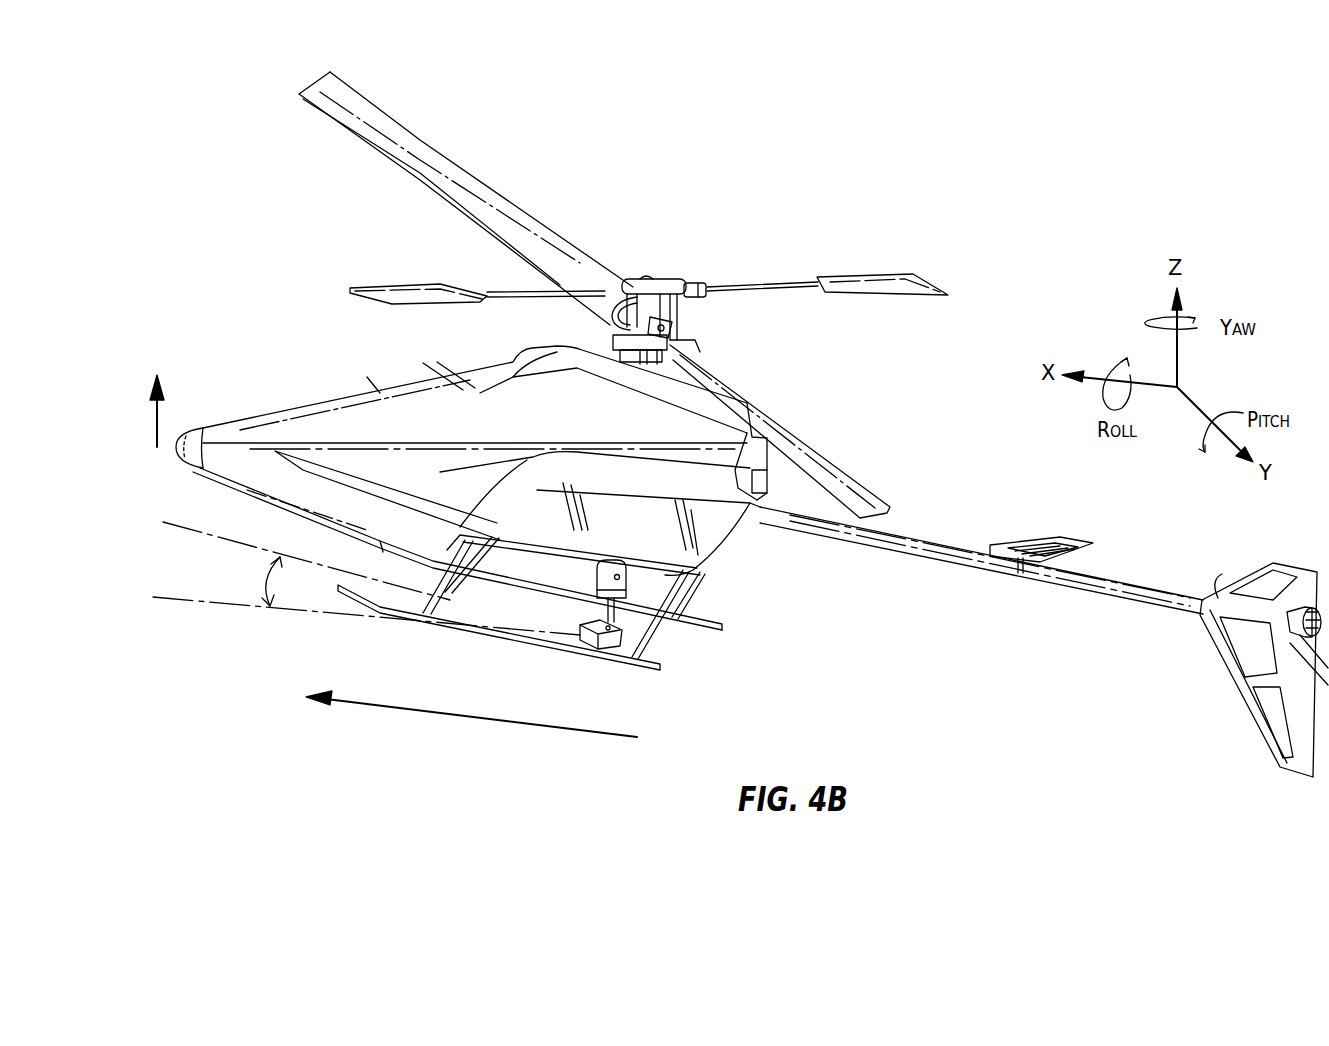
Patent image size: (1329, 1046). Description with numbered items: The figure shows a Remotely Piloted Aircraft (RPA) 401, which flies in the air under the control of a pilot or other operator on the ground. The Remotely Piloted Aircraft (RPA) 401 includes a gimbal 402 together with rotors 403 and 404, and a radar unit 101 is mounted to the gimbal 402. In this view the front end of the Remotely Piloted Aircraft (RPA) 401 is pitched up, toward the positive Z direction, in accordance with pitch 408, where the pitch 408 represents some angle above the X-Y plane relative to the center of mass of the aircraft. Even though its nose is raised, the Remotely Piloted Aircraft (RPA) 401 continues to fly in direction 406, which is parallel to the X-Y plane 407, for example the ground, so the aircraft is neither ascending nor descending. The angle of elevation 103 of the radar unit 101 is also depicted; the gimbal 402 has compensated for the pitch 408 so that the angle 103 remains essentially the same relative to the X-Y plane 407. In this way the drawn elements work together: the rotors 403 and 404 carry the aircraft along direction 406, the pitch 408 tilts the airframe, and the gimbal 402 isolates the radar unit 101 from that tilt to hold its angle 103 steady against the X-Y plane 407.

The Remotely Piloted Aircraft (RPA) 401 is at (689, 508).
The rotor 403 is at (622, 278).
The rotor 404 is at (1220, 580).
The gimbal 402 is at (620, 585).
The radar unit 101 is at (596, 638).
The direction 406 is at (457, 715).
The X-Y plane 407 is at (180, 599).
The angle of elevation 103 is at (279, 558).
The pitch 408 is at (157, 422).